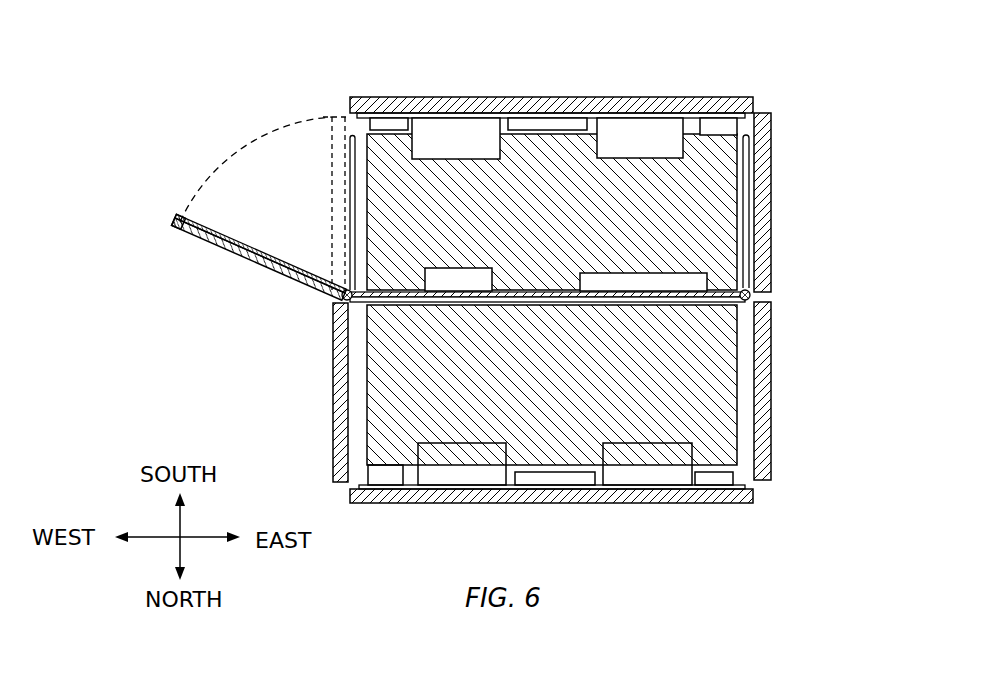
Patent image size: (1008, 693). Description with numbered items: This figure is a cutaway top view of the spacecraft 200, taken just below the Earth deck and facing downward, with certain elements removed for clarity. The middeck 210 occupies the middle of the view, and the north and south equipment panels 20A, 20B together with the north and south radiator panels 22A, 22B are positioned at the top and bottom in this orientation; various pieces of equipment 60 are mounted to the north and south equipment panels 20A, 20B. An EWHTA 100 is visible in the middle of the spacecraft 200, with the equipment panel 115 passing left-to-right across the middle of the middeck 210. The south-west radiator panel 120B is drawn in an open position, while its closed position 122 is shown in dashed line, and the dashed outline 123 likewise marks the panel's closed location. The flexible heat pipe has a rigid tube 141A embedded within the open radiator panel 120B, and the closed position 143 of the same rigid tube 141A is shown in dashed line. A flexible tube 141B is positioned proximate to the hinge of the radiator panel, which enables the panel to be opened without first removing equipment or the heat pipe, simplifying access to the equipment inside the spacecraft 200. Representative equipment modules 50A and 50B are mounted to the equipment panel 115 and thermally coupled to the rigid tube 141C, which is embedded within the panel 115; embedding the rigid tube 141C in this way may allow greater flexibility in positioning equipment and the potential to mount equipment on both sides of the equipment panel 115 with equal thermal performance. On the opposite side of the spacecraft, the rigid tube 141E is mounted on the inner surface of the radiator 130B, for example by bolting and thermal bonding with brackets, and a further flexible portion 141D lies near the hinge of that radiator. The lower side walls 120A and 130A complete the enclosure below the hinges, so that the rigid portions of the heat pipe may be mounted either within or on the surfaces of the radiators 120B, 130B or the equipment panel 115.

The spacecraft 200 is at (487, 50).
The EWHTA 100 is at (278, 112).
The closed door position outline 123 is at (338, 115).
The closed position of radiator panel 122 is at (175, 232).
The south-west radiator panel 120B is at (243, 260).
The rigid tube 141A is at (262, 260).
The flexible tube 141B is at (343, 300).
The lower side wall 120A is at (342, 410).
The closed position of rigid tube 143 is at (353, 202).
The equipment panel 115 is at (397, 305).
The rigid tube 141C is at (538, 297).
The middeck 210 is at (685, 373).
The equipment 60 is at (537, 122).
The equipment module 50A is at (463, 280).
The equipment module 50B is at (627, 282).
The south radiator panel 22B is at (420, 97).
The south equipment panel 20B is at (545, 98).
The radiator 130B is at (762, 176).
The rigid tube 141E is at (748, 220).
The flexible circuit board portion (right hinge) 141D is at (750, 296).
The lower right wall 130A is at (763, 410).
The north radiator panel 22A is at (435, 493).
The north equipment panel 20A is at (572, 485).